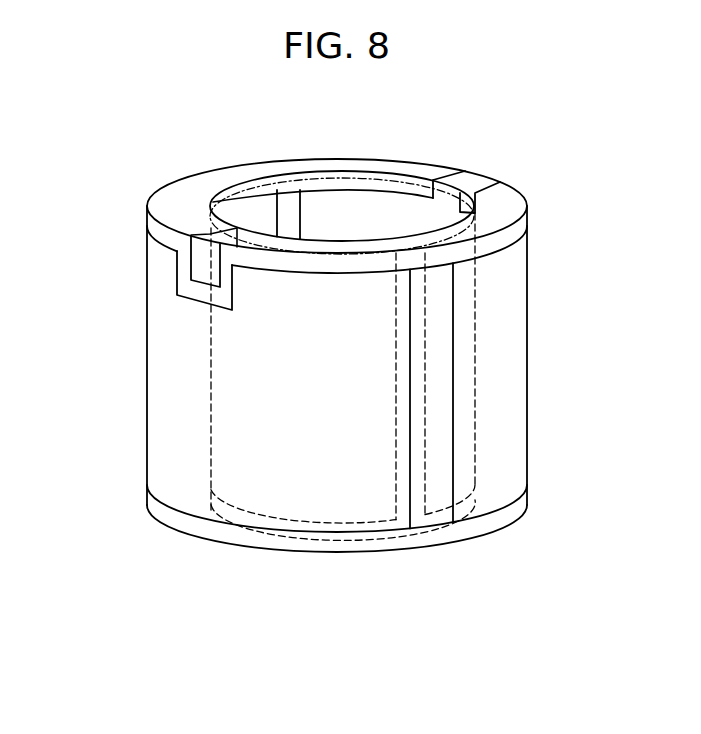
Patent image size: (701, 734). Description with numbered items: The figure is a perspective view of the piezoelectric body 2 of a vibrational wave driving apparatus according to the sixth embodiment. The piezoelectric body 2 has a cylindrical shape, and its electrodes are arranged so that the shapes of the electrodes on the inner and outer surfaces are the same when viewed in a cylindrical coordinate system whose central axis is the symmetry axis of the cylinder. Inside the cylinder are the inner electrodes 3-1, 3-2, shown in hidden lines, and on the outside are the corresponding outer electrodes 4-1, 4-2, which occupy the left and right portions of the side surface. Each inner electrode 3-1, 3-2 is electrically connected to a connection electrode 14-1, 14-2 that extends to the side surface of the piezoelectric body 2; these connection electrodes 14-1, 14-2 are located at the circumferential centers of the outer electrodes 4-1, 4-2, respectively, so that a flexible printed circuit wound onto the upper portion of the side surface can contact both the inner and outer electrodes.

The piezoelectric body 2 is at (215, 177).
The connection electrode 14-1 is at (205, 262).
The connection electrode 14-2 is at (473, 175).
The outer electrode 4-1 is at (160, 343).
The outer electrode 4-2 is at (515, 341).
The inner electrode 3-1 is at (338, 522).
The inner electrode 3-2 is at (475, 490).